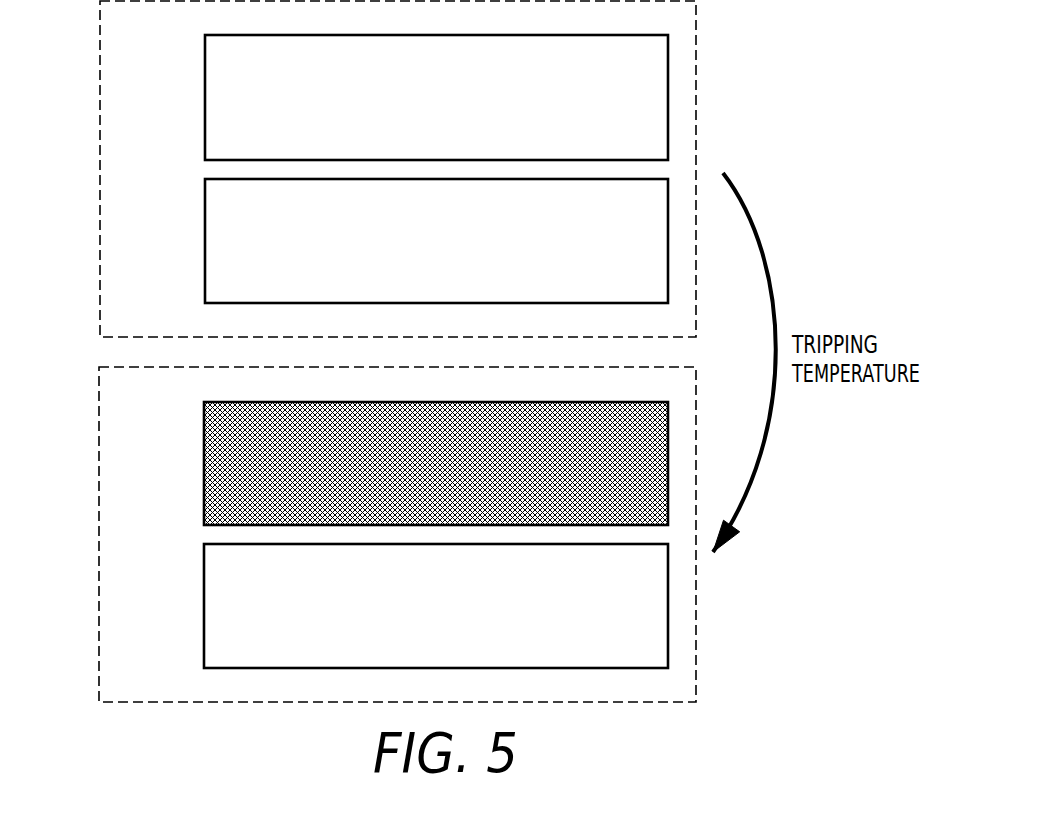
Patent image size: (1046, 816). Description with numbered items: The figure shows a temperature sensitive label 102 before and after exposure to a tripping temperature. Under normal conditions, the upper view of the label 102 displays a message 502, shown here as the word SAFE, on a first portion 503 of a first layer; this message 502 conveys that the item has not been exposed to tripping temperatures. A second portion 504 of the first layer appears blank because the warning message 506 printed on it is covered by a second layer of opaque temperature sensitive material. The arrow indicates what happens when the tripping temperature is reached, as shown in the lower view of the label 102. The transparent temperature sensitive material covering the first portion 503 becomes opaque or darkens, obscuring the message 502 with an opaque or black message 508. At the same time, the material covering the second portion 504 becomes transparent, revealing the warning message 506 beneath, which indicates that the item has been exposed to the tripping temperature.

The label 102 is at (100, 90).
The message 502 is at (487, 118).
The first portion 503 is at (205, 97).
The second portion 504 is at (205, 230).
The warning message 506 is at (533, 622).
The opaque or black message 508 is at (204, 460).